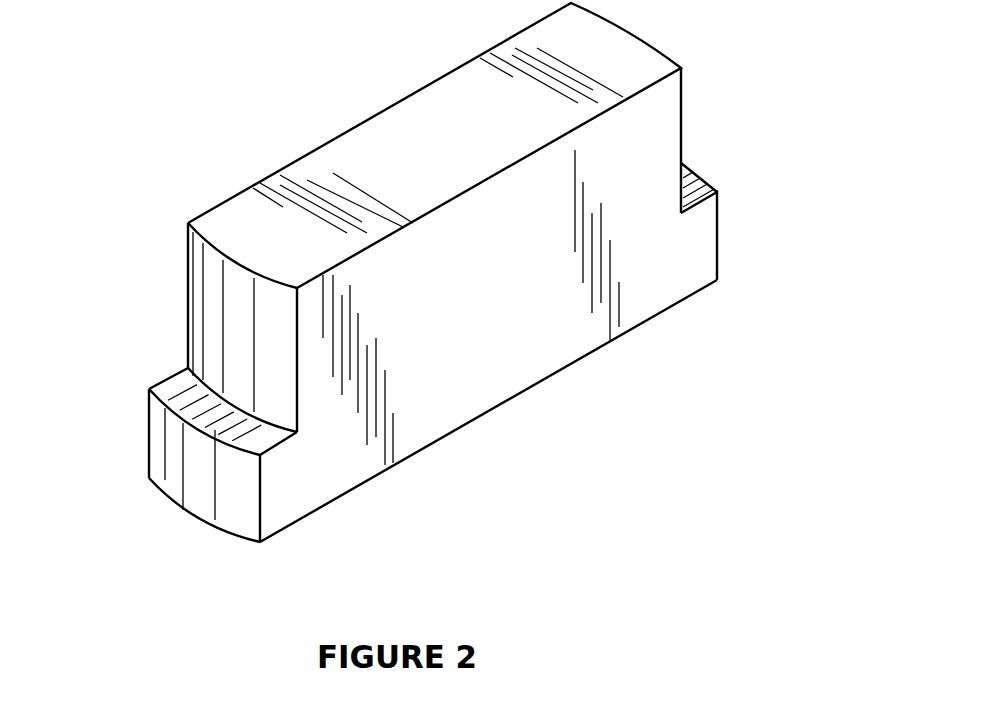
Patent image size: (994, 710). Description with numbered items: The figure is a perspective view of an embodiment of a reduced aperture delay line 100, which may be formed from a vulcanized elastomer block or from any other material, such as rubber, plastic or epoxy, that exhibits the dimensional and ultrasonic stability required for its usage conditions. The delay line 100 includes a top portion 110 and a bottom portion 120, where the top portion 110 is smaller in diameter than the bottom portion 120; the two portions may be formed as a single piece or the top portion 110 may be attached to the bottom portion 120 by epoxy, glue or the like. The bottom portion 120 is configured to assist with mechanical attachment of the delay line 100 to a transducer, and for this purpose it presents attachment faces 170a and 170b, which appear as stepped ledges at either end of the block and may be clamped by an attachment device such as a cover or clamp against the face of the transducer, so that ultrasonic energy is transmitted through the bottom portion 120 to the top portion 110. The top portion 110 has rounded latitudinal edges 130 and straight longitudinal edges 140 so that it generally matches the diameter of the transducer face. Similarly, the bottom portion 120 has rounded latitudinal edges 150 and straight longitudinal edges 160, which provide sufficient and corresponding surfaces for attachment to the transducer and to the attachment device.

The delay line 100 is at (216, 86).
The top portion 110 is at (667, 99).
The bottom portion 120 is at (695, 238).
The rounded latitudinal edges 130 is at (203, 281).
The straight longitudinal edges 140 is at (353, 127).
The rounded latitudinal edges 150 is at (171, 442).
The straight longitudinal edges 160 is at (485, 412).
The attachment face 170a is at (172, 383).
The attachment face 170b is at (698, 177).